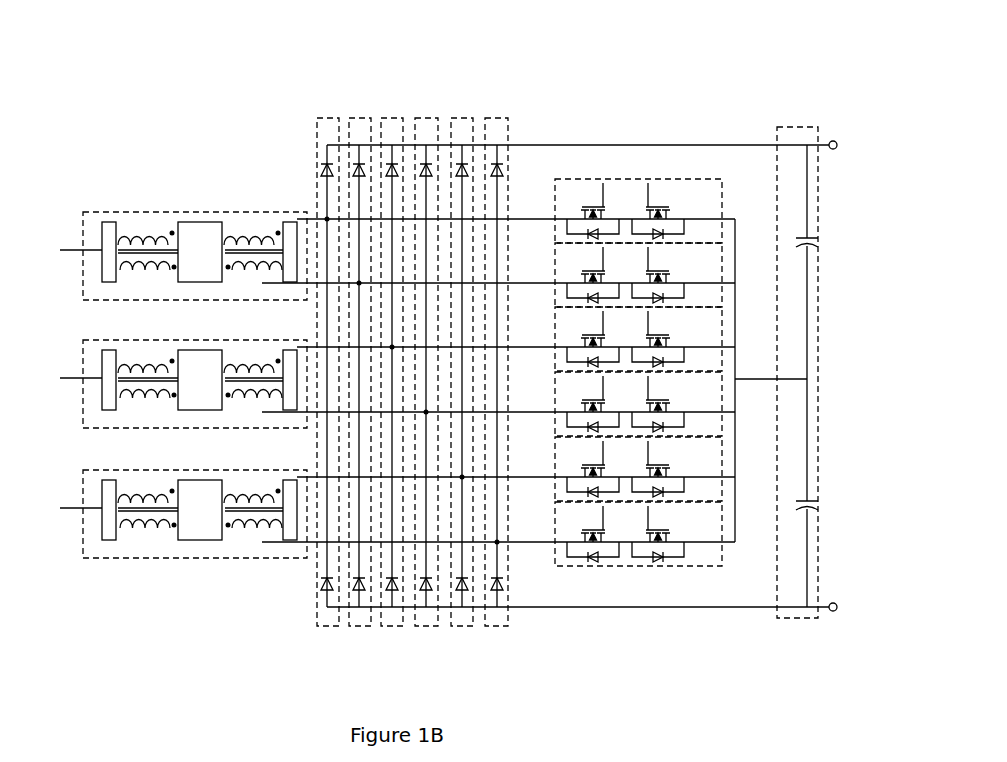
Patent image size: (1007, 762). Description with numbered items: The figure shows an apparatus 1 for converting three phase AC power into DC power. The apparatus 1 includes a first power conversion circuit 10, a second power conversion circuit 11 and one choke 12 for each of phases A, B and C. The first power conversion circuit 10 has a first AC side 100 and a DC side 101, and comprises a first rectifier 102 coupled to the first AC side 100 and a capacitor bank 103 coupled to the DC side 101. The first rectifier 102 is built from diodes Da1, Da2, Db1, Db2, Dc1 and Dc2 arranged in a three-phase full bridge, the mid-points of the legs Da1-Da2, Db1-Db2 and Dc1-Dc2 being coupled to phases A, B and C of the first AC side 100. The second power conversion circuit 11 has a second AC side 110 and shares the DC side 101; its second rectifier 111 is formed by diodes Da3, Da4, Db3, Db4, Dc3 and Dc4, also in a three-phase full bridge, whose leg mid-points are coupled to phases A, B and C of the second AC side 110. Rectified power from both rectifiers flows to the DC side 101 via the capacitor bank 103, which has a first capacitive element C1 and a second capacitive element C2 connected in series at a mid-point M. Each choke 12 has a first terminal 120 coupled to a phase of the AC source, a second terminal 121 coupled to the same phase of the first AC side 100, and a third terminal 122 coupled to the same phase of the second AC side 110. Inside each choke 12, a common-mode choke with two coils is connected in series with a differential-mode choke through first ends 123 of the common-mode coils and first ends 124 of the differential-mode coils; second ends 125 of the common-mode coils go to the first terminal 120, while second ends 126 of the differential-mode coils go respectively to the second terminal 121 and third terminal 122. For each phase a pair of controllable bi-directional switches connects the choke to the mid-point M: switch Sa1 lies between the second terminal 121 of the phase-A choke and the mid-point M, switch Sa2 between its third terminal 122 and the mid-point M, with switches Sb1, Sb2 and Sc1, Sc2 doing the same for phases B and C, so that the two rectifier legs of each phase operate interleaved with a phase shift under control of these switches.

The apparatus 1 is at (741, 437).
The first power conversion circuit 10 is at (92, 62).
The second power conversion circuit 11 is at (92, 178).
The choke 12 is at (163, 396).
The first AC side 100 is at (327, 219).
The DC side 101 is at (830, 141).
The first rectifier 102 is at (330, 625).
The capacitor bank 103 is at (800, 145).
The second AC side 110 is at (359, 283).
The second rectifier 111 is at (500, 120).
The first terminal 120 is at (68, 393).
The second terminal 121 is at (266, 355).
The third terminal 122 is at (262, 408).
The first ends of the coils of the first common-mode choke 123 is at (165, 378).
The first ends of the coil of the first differential-mode choke 124 is at (166, 398).
The second ends of the coils of the first common-mode choke 125 is at (157, 365).
The second ends of the coils of the first differential-mode choke 126 is at (266, 381).
The diode Da1 is at (327, 166).
The diode Da2 is at (327, 588).
The diode Da3 is at (359, 164).
The diode Da4 is at (359, 590).
The diode Db1 is at (392, 164).
The diode Db2 is at (392, 590).
The diode Db3 is at (430, 176).
The diode Db4 is at (462, 590).
The diode Dc1 is at (462, 164).
The diode Dc2 is at (426, 590).
The diode Dc3 is at (499, 170).
The diode Dc4 is at (499, 590).
The controllable bi-directional switch Sa1 is at (710, 213).
The controllable bi-directional switch Sa2 is at (710, 266).
The controllable bi-directional switch Sb1 is at (712, 345).
The controllable bi-directional switch Sb2 is at (706, 402).
The controllable bi-directional switch Sc1 is at (712, 475).
The controllable bi-directional switch Sc2 is at (706, 530).
The first capacitive element C1 is at (804, 262).
The second capacitive element C2 is at (804, 493).
The mid-point M is at (771, 388).